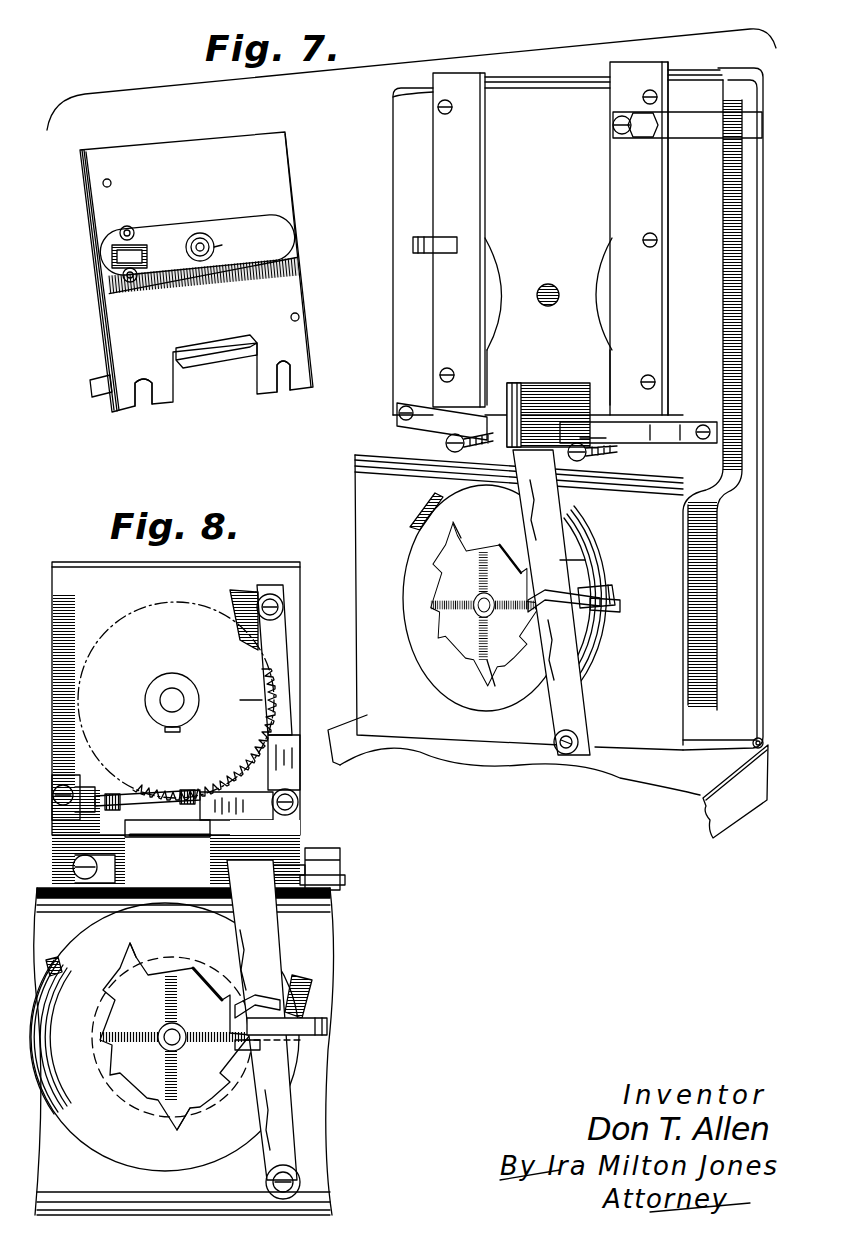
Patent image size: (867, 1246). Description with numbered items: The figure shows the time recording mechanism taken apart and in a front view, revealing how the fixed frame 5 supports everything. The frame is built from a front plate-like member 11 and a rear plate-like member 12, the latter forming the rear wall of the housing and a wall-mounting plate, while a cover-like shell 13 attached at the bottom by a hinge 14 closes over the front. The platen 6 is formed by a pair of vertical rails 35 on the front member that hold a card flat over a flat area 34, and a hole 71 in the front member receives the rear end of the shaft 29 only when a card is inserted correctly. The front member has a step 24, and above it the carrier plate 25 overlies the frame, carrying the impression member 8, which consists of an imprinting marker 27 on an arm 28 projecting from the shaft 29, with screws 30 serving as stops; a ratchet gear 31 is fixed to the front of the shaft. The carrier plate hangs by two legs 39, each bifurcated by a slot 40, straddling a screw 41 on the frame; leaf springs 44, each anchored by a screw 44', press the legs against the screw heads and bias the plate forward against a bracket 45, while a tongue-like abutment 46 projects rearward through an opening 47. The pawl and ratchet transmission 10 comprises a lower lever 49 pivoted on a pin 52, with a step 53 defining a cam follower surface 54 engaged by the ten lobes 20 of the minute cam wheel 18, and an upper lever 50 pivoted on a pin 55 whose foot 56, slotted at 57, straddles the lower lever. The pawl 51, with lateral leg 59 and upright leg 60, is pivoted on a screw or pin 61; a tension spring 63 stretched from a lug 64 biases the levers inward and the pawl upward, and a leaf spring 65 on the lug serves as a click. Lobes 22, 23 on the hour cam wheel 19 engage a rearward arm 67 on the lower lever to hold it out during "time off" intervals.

In FIG. 7, the fixed frame 5 is at (778, 208).
In FIG. 7, the platen 6 is at (652, 300).
In FIG. 7, the impression member 8 is at (102, 286).
In FIG. 7, the pawl and ratchet transmission 10 is at (578, 572).
In FIG. 8, the pawl and ratchet transmission 10 is at (298, 965).
In FIG. 7, the front plate-like member 11 is at (405, 206).
In FIG. 8, the front plate-like member 11 is at (322, 852).
In FIG. 7, the rear plate-like member 12 is at (760, 262).
In FIG. 7, the cover-like shell 13 is at (730, 810).
In FIG. 7, the hinge 14 is at (765, 738).
In FIG. 7, the minute cam wheel 18 is at (452, 625).
In FIG. 8, the minute cam wheel 18 is at (205, 1090).
In FIG. 7, the hour cam wheel 19 is at (412, 598).
In FIG. 8, the hour cam wheel 19 is at (212, 1150).
In FIG. 7, the lobes 20 is at (466, 528).
In FIG. 8, the lobes 20 is at (160, 955).
In FIG. 7, the lobe 22 is at (420, 515).
In FIG. 8, the lobe 22 is at (315, 990).
In FIG. 7, the lobe 23 is at (598, 676).
In FIG. 8, the lobe 23 is at (52, 965).
In FIG. 7, the step 24 is at (375, 450).
In FIG. 8, the step 24 is at (178, 888).
In FIG. 7, the carrier plate 25 is at (283, 152).
In FIG. 8, the carrier plate 25 is at (222, 580).
In FIG. 7, the imprinting marker 27 is at (110, 256).
In FIG. 7, the arm 28 is at (238, 222).
In FIG. 7, the shaft 29 is at (208, 258).
In FIG. 8, the shaft 29 is at (185, 698).
In FIG. 7, the screws 30 is at (128, 226).
In FIG. 8, the ratchet gear 31 is at (265, 708).
In FIG. 7, the flat area 34 is at (543, 205).
In FIG. 7, the rails 35 is at (455, 172).
In FIG. 7, the legs 39 is at (110, 370).
In FIG. 8, the legs 39 is at (95, 845).
In FIG. 7, the slot 40 is at (146, 406).
In FIG. 8, the slot 40 is at (98, 880).
In FIG. 7, the screw 41 is at (445, 440).
In FIG. 8, the screw 41 is at (72, 860).
In FIG. 7, the leaf springs 44 is at (557, 409).
In FIG. 7, the screw 44' is at (533, 410).
In FIG. 7, the bracket 45 is at (411, 246).
In FIG. 7, the tongue-like abutment 46 is at (218, 368).
In FIG. 8, the tongue-like abutment 46 is at (165, 838).
In FIG. 7, the opening 47 is at (513, 392).
In FIG. 7, the lower lever 49 is at (560, 628).
In FIG. 8, the lower lever 49 is at (262, 930).
In FIG. 8, the upper lever 50 is at (283, 675).
In FIG. 8, the pawl 51 is at (300, 780).
In FIG. 7, the pin 52 is at (558, 750).
In FIG. 8, the pin 52 is at (300, 1175).
In FIG. 7, the step 53 is at (565, 604).
In FIG. 8, the step 53 is at (248, 1052).
In FIG. 7, the cam follower surface 54 is at (530, 595).
In FIG. 8, the cam follower surface 54 is at (235, 1012).
In FIG. 7, the pin 55 is at (103, 183).
In FIG. 8, the pin 55 is at (280, 605).
In FIG. 8, the foot 56 is at (320, 878).
In FIG. 8, the slot 57 is at (255, 870).
In FIG. 8, the leg 59 is at (228, 792).
In FIG. 8, the leg 60 is at (268, 750).
In FIG. 8, the screw or pin 61 is at (298, 802).
In FIG. 8, the tension spring 63 is at (115, 792).
In FIG. 8, the lug 64 is at (55, 812).
In FIG. 8, the leaf spring 65 is at (60, 740).
In FIG. 7, the arm 67 is at (615, 594).
In FIG. 8, the arm 67 is at (287, 1026).
In FIG. 7, the hole 71 is at (535, 296).